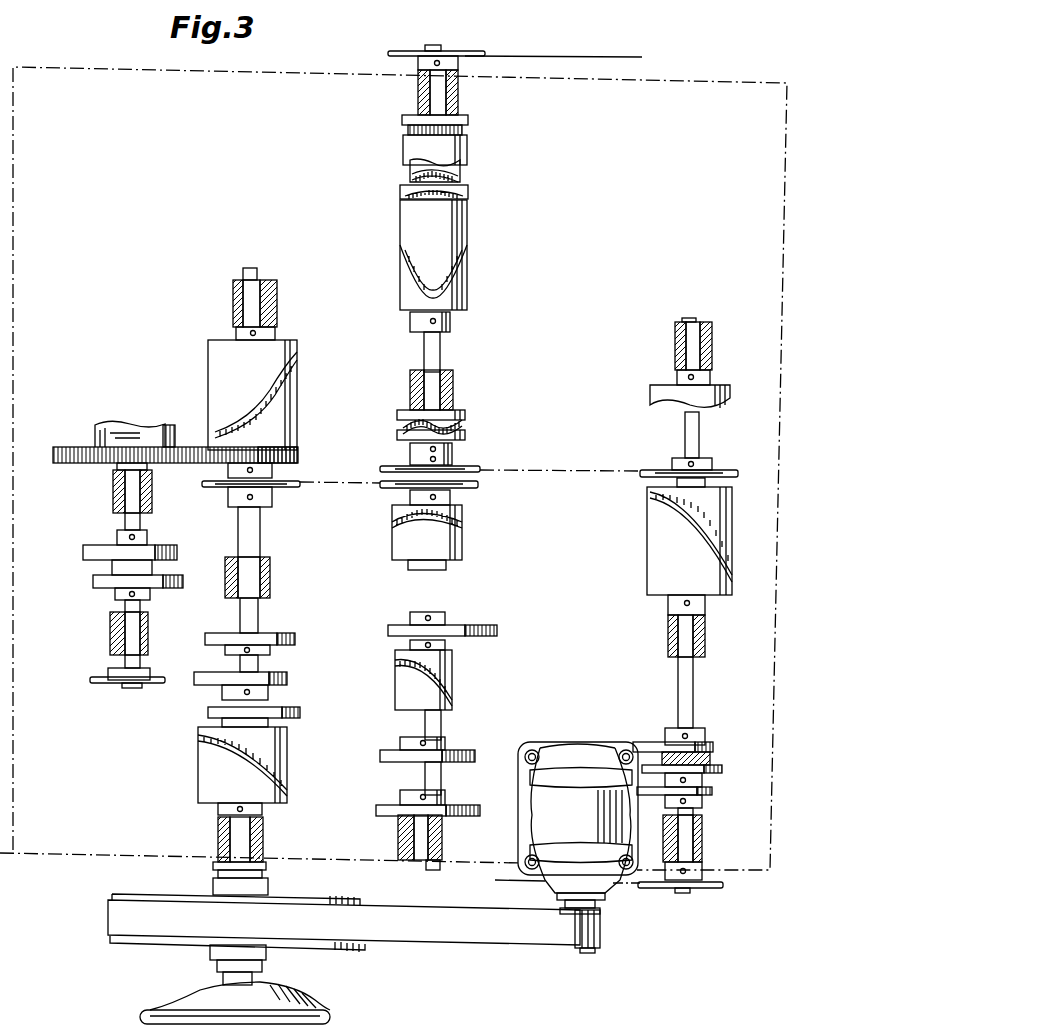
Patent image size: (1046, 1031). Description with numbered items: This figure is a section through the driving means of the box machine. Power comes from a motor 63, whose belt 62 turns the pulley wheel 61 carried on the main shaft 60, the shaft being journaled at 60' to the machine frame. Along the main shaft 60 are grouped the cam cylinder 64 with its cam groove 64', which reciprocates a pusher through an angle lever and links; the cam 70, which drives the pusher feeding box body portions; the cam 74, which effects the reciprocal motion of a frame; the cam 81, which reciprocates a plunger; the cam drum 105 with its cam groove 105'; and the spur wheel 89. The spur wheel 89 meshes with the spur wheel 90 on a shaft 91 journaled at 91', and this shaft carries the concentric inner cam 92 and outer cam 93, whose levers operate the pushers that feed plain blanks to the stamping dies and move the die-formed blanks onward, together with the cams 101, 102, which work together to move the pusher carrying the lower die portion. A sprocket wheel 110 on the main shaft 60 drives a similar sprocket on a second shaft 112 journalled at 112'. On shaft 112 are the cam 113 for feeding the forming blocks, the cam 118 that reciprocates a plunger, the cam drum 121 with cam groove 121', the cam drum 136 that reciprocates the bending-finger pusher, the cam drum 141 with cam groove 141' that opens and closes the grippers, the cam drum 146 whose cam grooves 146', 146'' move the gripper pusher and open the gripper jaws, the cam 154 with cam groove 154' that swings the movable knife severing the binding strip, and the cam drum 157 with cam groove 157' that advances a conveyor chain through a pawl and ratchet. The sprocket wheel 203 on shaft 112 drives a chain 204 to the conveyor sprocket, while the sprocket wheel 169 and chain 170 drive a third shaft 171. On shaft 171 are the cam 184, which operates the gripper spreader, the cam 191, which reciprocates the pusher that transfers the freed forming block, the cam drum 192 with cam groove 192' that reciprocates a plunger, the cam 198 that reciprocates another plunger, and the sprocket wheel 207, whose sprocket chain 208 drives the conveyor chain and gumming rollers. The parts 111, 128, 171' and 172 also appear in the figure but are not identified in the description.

The main shaft 60 is at (277, 606).
The journal 60' is at (286, 563).
The pulley wheel 61 is at (340, 950).
The belt 62 is at (493, 946).
The motor 63 is at (571, 748).
The cam cylinder 64 is at (268, 754).
The cam groove 64' is at (271, 765).
The cam 70 is at (298, 712).
The cam 74 is at (285, 676).
The cam 81 is at (295, 636).
The spur wheel 89 is at (298, 455).
The spur wheel 90 is at (60, 447).
The shaft 91 is at (105, 588).
The journal 91' is at (99, 562).
The inner cam 92 is at (112, 420).
The outer cam 93 is at (170, 427).
The cam 101 is at (95, 580).
The cam 102 is at (88, 548).
The cam drum 105 is at (280, 380).
The cam groove 105' is at (287, 385).
The sprocket wheel 110 is at (300, 483).
The center line 111 is at (322, 481).
The shaft 112 is at (458, 439).
The journal 112' is at (431, 465).
The cam 113 is at (478, 808).
The cam 118 is at (475, 752).
The cam drum 121 is at (452, 675).
The cam groove 121' is at (455, 682).
The gear 128 is at (492, 625).
The cam drum 136 is at (463, 545).
The cam drum 141 is at (456, 411).
The cam groove 141' is at (463, 416).
The cam drum 146 is at (460, 255).
The cam groove 146' is at (463, 261).
The cam groove 146'' is at (464, 187).
The cam 154 is at (401, 166).
The cam groove 154' is at (399, 178).
The cam drum 157 is at (461, 127).
The cam groove 157' is at (466, 127).
The sprocket wheel 169 is at (470, 466).
The chain 170 is at (556, 470).
The shaft 171 is at (657, 578).
The shaft bearing 171' is at (687, 583).
The gear 172 is at (712, 790).
The cam 184 is at (720, 767).
The cam 191 is at (640, 744).
The cam drum 192 is at (669, 541).
The cam groove 192' is at (667, 537).
The cam 198 is at (655, 388).
The sprocket wheel 203 is at (396, 50).
The chain 204 is at (545, 55).
The sprocket wheel 207 is at (705, 892).
The sprocket chain 208 is at (628, 885).